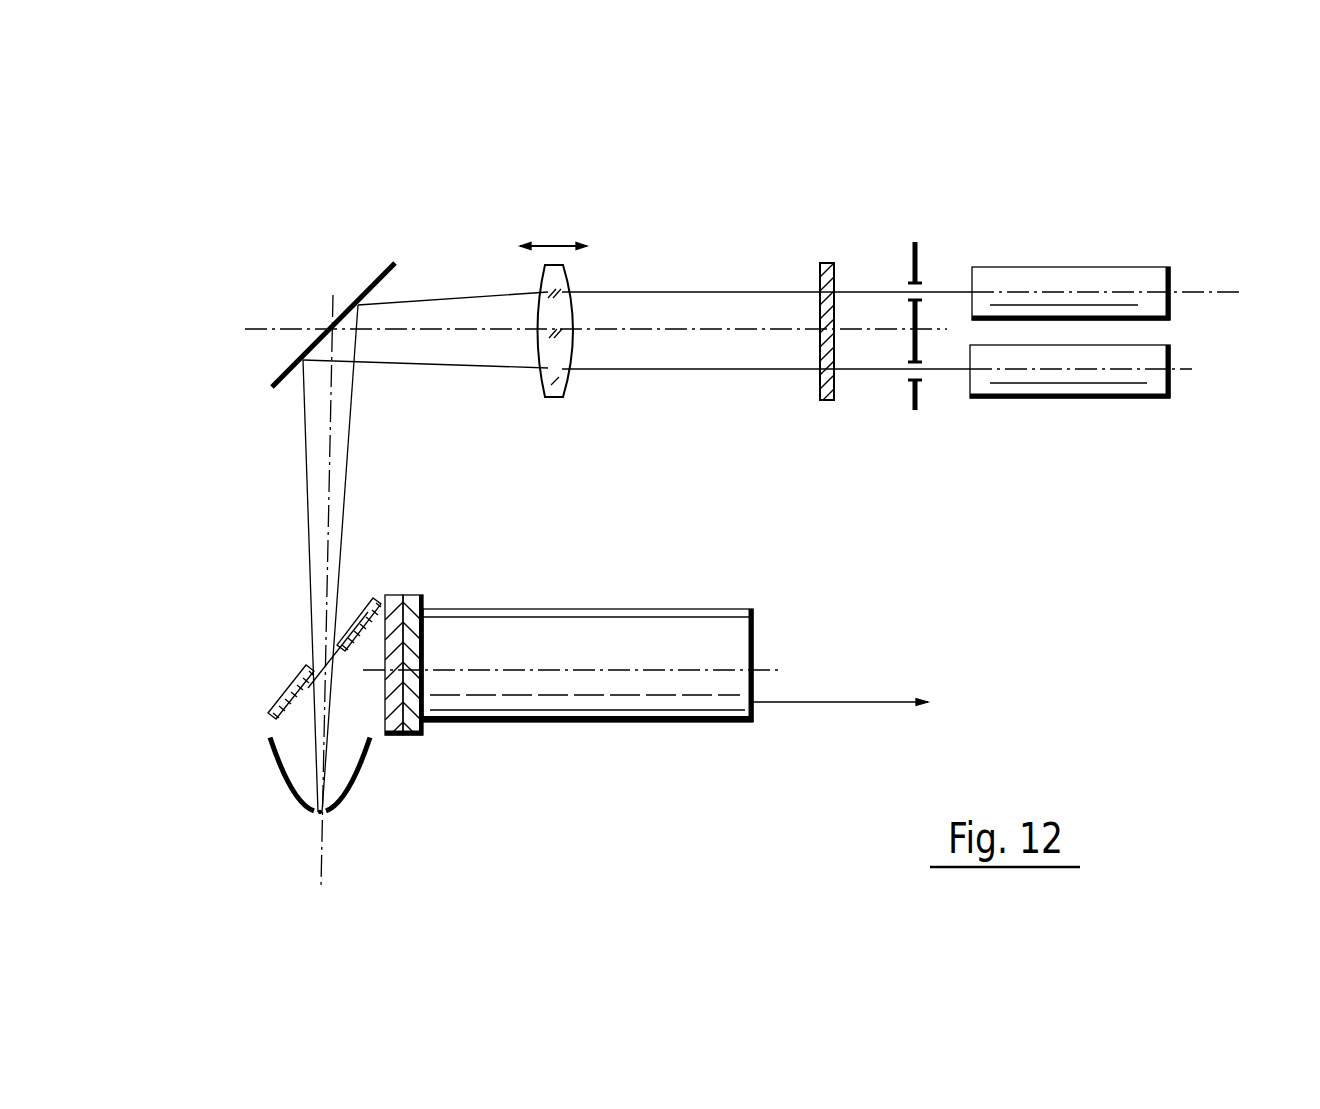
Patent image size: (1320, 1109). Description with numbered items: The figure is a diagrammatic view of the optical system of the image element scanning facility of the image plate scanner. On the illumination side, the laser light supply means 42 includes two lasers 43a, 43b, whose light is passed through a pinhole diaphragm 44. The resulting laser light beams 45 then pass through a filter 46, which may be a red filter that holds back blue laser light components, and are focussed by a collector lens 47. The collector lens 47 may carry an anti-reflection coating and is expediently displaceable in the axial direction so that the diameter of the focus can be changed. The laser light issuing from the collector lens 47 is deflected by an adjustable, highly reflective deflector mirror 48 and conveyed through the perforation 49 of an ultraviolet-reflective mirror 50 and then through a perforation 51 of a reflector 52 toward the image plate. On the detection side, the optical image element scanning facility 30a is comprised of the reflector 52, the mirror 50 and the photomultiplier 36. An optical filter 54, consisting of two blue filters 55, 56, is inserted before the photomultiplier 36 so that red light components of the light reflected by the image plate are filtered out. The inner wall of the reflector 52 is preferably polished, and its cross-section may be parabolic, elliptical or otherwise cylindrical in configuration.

The laser light supply means 42 is at (777, 207).
The laser 43a is at (1172, 385).
The laser 43b is at (1172, 307).
The pinhole diaphragm 44 is at (918, 255).
The laser light beams 45 is at (887, 292).
The filter 46 is at (821, 400).
The collector lens 47 is at (545, 382).
The deflector mirror 48 is at (273, 380).
The perforation 49 is at (310, 658).
The ultraviolet-reflective mirror 50 is at (358, 612).
The perforation 51 is at (310, 818).
The reflector 52 is at (272, 758).
The optical filter 54 is at (420, 585).
The blue filter 55 is at (390, 595).
The blue filter 56 is at (425, 603).
The photomultiplier 36 is at (708, 700).
The optical image element scanning facility 30a is at (527, 845).